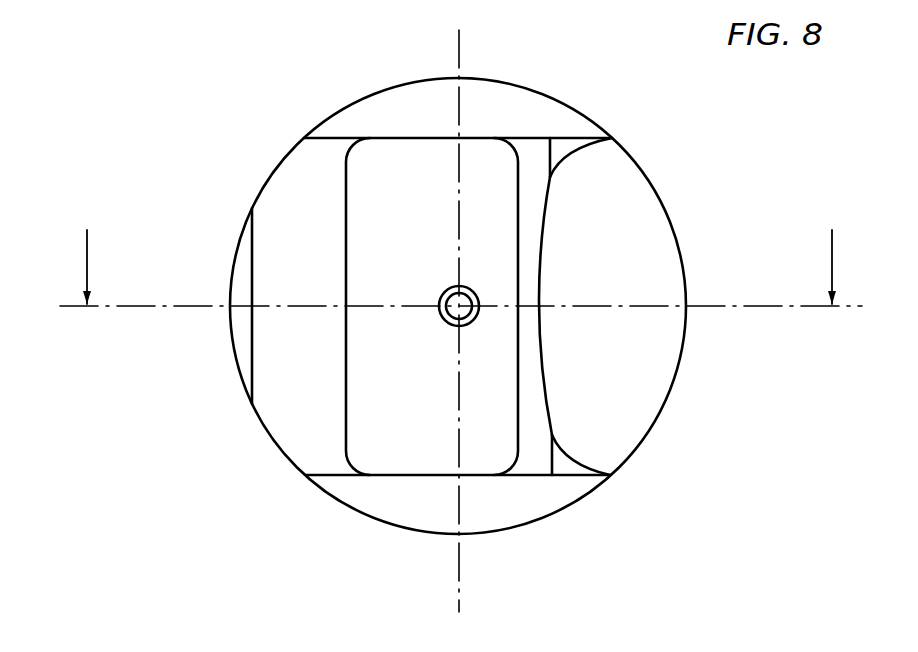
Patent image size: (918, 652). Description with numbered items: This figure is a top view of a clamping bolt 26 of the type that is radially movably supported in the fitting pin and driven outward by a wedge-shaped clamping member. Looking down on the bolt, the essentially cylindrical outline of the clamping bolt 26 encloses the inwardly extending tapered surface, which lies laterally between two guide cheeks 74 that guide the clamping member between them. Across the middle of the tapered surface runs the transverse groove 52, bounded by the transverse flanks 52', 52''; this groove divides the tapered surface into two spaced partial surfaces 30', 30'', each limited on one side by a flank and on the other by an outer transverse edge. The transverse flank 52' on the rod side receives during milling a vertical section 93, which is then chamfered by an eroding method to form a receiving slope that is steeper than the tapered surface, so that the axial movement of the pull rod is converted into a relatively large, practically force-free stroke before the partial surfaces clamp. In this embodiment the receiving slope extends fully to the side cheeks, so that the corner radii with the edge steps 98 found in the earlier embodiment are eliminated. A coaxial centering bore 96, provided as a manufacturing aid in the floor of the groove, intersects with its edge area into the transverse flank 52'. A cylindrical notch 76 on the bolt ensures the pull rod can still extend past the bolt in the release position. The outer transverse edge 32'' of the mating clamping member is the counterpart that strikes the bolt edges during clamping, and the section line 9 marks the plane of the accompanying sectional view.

The clamping bolt 26 is at (672, 227).
The guide cheeks 74 is at (553, 110).
The edge steps 98 is at (345, 148).
The transverse groove 52 is at (379, 282).
The vertical section 93 is at (517, 183).
The partial surface 30' is at (610, 127).
The cylindrical notch 76 is at (612, 363).
The transverse flank 52' is at (457, 236).
The transverse flank 52'' is at (273, 190).
The outer transverse edge 32'' is at (205, 306).
The partial surface 30'' is at (264, 452).
The centering bore 96 is at (450, 325).
The section line 9- 9 is at (467, 258).